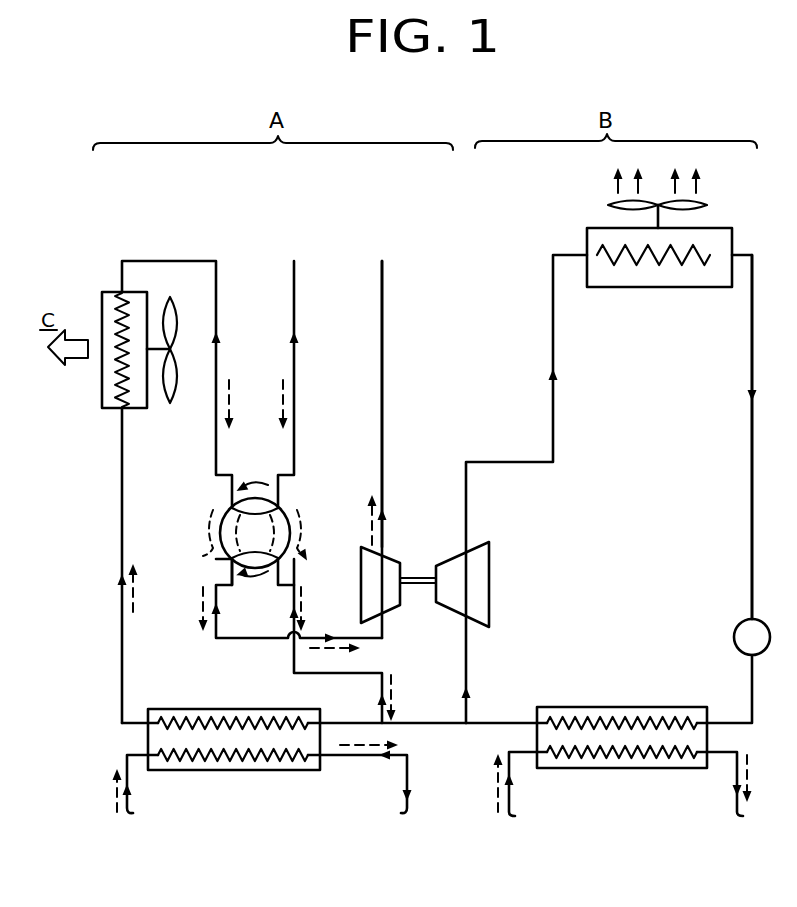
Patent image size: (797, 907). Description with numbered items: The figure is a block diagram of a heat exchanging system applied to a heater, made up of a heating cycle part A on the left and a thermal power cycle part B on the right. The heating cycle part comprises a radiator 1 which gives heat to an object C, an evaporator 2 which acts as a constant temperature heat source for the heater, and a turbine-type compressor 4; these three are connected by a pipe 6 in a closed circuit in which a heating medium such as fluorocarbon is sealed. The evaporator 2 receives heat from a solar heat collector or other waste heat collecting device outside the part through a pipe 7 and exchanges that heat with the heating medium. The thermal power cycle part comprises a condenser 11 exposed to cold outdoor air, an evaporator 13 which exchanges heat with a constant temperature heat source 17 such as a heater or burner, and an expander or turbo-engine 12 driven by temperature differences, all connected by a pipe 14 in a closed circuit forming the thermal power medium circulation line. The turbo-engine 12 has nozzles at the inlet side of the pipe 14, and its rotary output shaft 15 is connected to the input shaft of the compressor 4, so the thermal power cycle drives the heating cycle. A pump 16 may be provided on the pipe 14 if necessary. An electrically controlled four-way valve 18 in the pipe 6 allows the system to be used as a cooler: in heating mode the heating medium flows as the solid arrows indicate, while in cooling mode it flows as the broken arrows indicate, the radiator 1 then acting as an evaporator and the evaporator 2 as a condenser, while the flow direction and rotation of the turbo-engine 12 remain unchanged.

The radiator 1 is at (137, 292).
The evaporator 2 is at (172, 709).
The compressor 4 is at (361, 588).
The pipe 6 is at (123, 670).
The pipe 7 is at (355, 755).
The condenser 11 is at (642, 287).
The expander (turbo-engine) 12 is at (489, 565).
The evaporator 13 is at (565, 707).
The pipe 14 is at (752, 497).
The rotary output shaft 15 is at (415, 586).
The pump 16 is at (736, 634).
The constant temperature heat source 17 is at (600, 752).
The four-way valve 18 is at (223, 516).